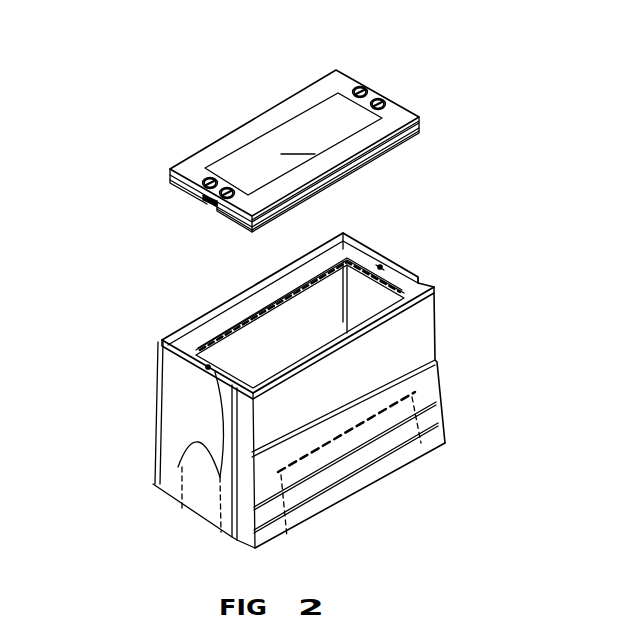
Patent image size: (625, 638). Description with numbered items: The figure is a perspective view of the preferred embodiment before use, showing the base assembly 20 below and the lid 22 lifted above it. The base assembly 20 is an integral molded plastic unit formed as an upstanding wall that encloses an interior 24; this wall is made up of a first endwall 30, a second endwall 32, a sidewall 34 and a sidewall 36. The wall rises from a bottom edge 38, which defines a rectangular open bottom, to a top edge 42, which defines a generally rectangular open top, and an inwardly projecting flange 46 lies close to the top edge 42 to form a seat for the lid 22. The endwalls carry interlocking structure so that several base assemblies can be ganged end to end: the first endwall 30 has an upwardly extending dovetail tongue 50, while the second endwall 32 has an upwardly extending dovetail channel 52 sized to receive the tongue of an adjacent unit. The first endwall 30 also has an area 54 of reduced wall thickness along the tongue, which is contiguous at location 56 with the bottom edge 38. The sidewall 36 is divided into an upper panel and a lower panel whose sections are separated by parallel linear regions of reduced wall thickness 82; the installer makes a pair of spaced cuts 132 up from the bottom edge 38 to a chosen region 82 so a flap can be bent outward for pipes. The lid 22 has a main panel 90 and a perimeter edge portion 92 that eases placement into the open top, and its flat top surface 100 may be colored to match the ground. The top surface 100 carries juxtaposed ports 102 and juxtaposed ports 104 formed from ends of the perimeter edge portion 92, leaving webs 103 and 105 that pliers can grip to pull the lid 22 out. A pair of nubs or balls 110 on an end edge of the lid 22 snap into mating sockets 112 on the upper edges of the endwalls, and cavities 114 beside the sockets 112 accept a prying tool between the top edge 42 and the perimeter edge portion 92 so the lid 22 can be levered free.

The base assembly 20 is at (270, 390).
The lid 22 is at (288, 98).
The interior 24 is at (303, 318).
The first endwall 30 is at (180, 430).
The second endwall 32 is at (336, 240).
The sidewall 34 is at (262, 347).
The sidewall 36 is at (413, 337).
The bottom edge 38 is at (322, 518).
The top edge 42 is at (200, 338).
The inwardly projecting flange 46 is at (227, 318).
The dovetail tongue 50 is at (198, 413).
The dovetail channel 52 is at (350, 238).
The area of reduced wall thickness 54 is at (202, 475).
The contiguous location 56 is at (207, 527).
The linear region of reduced wall thickness 82 is at (438, 382).
The main panel 90 is at (394, 122).
The perimeter edge portion 92 is at (380, 153).
The top surface 100 is at (293, 144).
The ports 102 is at (362, 88).
The web 103 is at (368, 96).
The ports 104 is at (208, 180).
The web 105 is at (212, 186).
The nubs or balls 110 is at (380, 98).
The mating sockets 112 is at (208, 367).
The cavities 114 is at (183, 452).
The cuts 132 is at (446, 441).